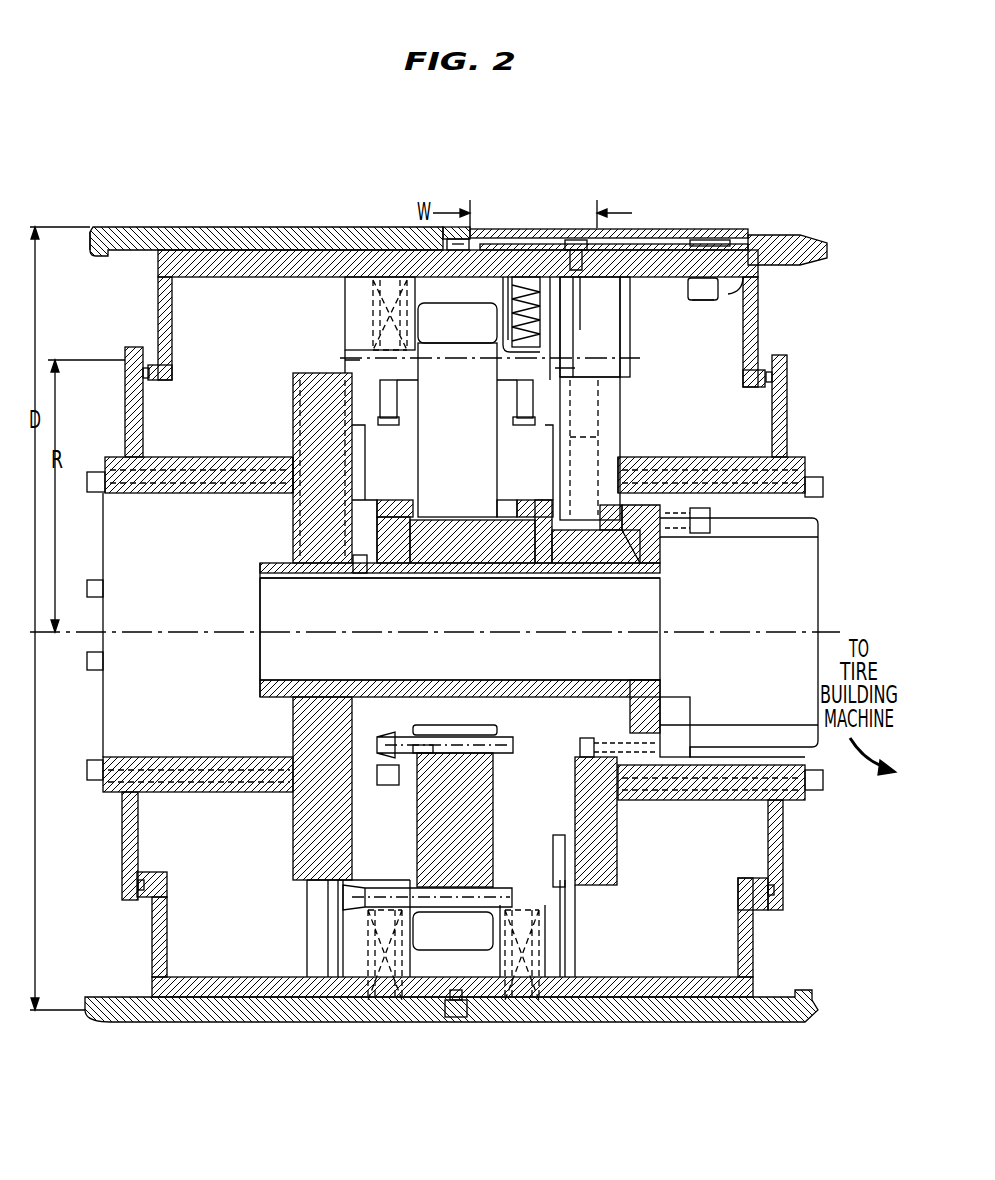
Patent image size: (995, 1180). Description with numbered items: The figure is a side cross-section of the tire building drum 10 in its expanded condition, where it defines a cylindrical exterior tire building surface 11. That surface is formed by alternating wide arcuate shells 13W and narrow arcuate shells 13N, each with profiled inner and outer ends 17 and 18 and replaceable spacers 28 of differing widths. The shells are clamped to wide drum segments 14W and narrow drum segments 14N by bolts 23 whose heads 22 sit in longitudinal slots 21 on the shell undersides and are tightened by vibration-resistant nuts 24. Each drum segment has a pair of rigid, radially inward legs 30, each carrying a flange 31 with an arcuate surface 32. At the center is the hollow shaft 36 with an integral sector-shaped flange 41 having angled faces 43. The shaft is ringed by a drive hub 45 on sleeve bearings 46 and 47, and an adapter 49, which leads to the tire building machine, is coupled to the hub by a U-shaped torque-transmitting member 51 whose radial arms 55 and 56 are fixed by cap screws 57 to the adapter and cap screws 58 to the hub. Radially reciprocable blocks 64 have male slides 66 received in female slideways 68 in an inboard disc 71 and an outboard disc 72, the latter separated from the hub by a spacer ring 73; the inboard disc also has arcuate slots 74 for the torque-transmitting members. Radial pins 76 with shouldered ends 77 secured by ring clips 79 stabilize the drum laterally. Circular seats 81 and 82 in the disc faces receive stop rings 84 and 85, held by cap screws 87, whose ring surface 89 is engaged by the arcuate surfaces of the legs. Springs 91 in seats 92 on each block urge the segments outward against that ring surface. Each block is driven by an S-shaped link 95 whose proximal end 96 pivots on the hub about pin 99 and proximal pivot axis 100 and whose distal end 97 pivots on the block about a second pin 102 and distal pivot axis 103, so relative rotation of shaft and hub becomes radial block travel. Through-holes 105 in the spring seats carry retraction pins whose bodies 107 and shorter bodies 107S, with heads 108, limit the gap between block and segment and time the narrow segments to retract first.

The tire building drum 10 is at (137, 140).
The exterior tire building surface 11 is at (217, 220).
The wide arcuate shells 13W is at (270, 227).
The narrow arcuate shells 13N is at (252, 1022).
The wide drum segments 14W is at (326, 250).
The narrow drum segments 14N is at (305, 997).
The inner profiled end 17 is at (798, 235).
The outer profiled end 18 is at (112, 227).
The longitudinal slot 21 is at (660, 232).
The bolt head 22 is at (710, 232).
The bolt 23 is at (760, 278).
The vibration-resistant nut 24 is at (718, 305).
The replaceable spacer 28 is at (525, 230).
The leg 30 is at (158, 305).
The flange 31 is at (172, 372).
The arcuate surface 32 is at (145, 382).
The hollow shaft 36 is at (590, 680).
The sector-shaped flange 41 is at (660, 712).
The angled face 43 is at (640, 680).
The drive hub 45 is at (480, 578).
The sleeve bearing 46 is at (518, 578).
The sleeve bearing 47 is at (392, 578).
The adapter 49 is at (772, 537).
The torque-transmitting member 51 is at (610, 578).
The radial arm 55 is at (660, 560).
The radial arm 56 is at (555, 578).
The cap screw 57 is at (690, 533).
The cap screw 58 is at (503, 500).
The radially reciprocable block 64 is at (410, 277).
The male radial slide 66 is at (350, 333).
The female slideway 68 is at (355, 495).
The inboard disc 71 is at (620, 412).
The outboard disc 72 is at (293, 408).
The spacer ring 73 is at (365, 578).
The arcuate slot 74 is at (590, 578).
The radial pin 76 is at (590, 345).
The shouldered end 77 is at (625, 282).
The ring clip 79 is at (568, 245).
The circular seat 81 is at (625, 465).
The circular seat 82 is at (293, 450).
The stop ring 84 is at (190, 470).
The stop ring 85 is at (740, 457).
The cap screw 87 is at (816, 477).
The ring surface 89 is at (130, 347).
The spring 91 is at (372, 290).
The seat 92 is at (372, 315).
The link 95 is at (393, 818).
The proximal end 96 is at (428, 578).
The distal end 97 is at (465, 343).
The pin 99 is at (503, 753).
The proximal pivot axis 100 is at (465, 500).
The second pin 102 is at (408, 888).
The distal pivot axis 103 is at (440, 358).
The through-hole 105 is at (498, 277).
The retraction pin body 107 is at (380, 425).
The shorter retraction pin body 107S is at (343, 362).
The head 108 is at (512, 395).